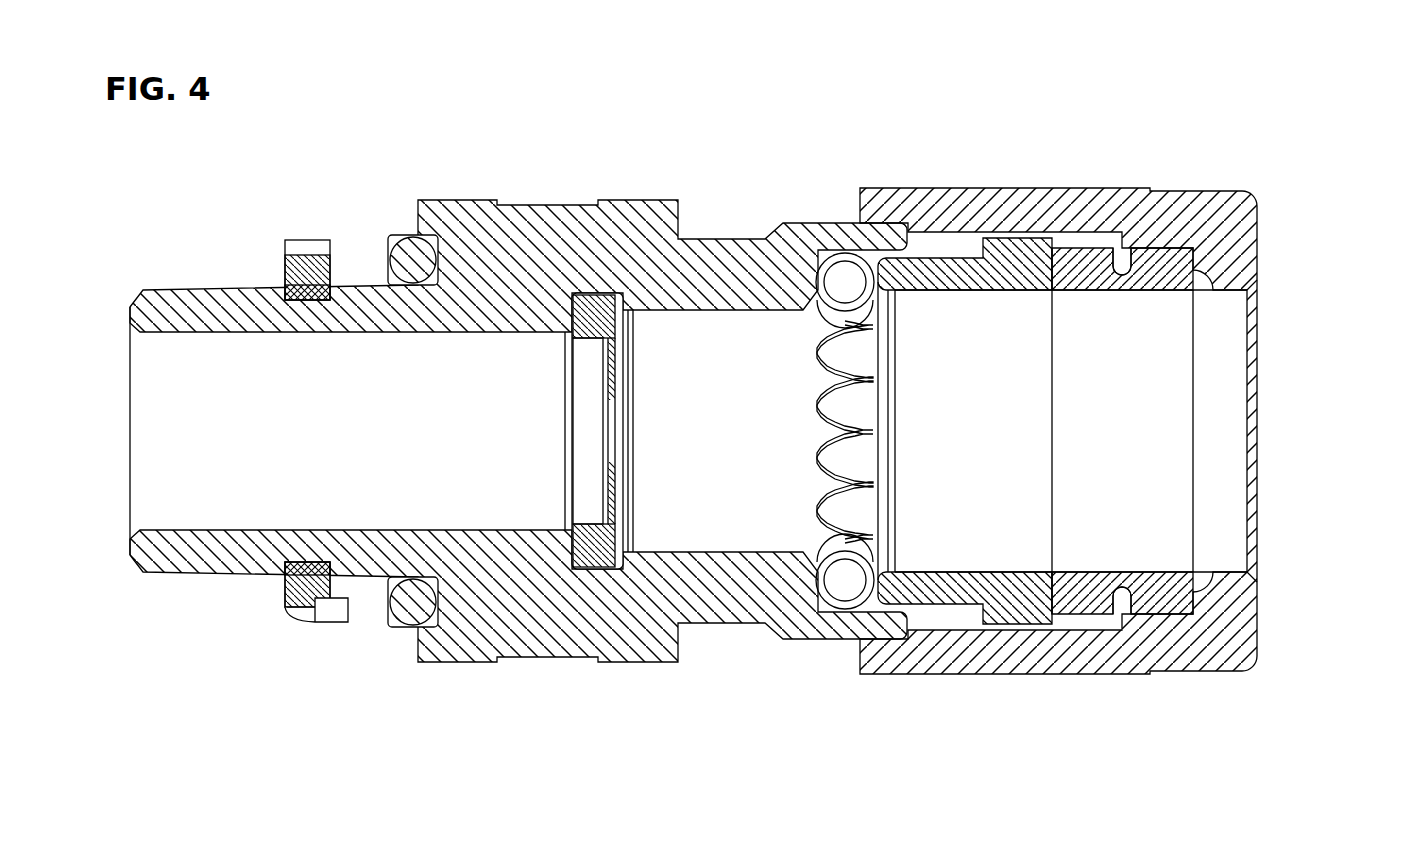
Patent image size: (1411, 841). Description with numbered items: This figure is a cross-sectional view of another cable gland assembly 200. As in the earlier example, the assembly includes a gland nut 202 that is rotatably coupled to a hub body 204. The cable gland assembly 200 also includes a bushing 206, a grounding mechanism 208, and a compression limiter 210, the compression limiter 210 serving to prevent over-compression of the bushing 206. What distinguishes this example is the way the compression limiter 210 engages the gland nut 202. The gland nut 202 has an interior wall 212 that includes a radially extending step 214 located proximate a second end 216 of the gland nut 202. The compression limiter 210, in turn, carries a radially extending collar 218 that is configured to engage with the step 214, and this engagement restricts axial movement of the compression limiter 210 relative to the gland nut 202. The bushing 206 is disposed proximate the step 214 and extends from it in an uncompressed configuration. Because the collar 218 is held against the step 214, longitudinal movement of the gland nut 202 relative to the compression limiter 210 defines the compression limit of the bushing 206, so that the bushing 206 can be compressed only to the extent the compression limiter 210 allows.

The cable gland assembly 200 is at (1232, 118).
The gland nut 202 is at (1217, 190).
The hub body 204 is at (213, 292).
The bushing 206 is at (1123, 268).
The grounding mechanism 208 is at (822, 257).
The compression limiter 210 is at (943, 250).
The interior wall 212 is at (943, 623).
The radially extending step 214 is at (1115, 617).
The second end 216 is at (1247, 613).
The radially extending collar 218 is at (1038, 617).